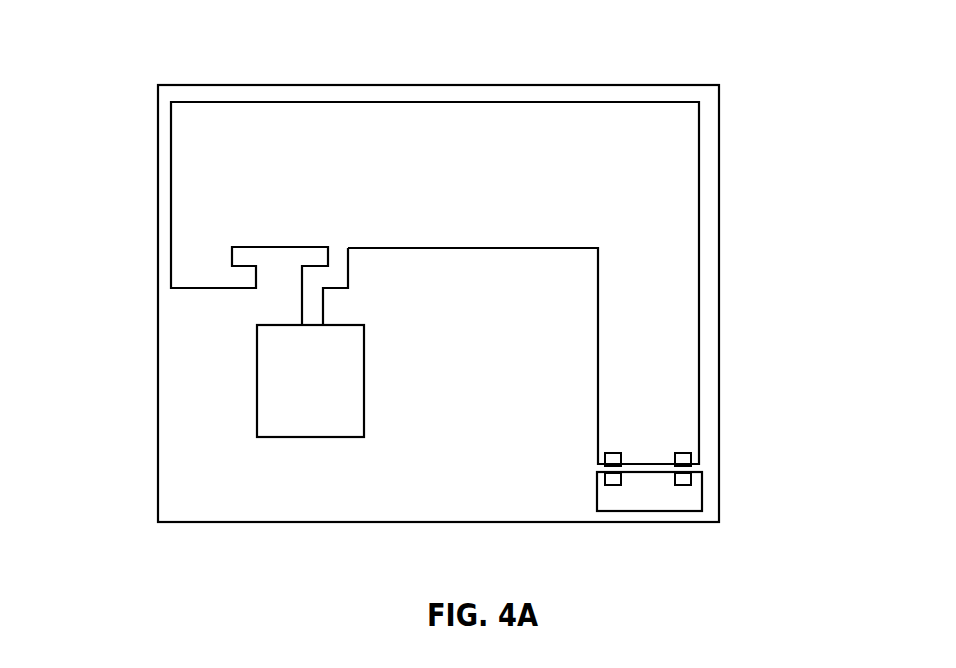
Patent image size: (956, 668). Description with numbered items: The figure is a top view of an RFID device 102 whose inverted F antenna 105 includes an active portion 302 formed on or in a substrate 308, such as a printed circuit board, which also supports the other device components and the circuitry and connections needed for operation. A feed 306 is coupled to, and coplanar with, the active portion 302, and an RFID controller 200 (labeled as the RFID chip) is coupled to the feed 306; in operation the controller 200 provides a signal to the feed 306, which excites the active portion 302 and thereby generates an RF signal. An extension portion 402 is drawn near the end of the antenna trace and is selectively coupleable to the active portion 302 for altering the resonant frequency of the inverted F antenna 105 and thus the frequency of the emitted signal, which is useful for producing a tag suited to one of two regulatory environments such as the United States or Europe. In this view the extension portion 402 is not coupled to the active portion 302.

The RFID device 102 is at (134, 156).
The inverted F antenna 105 is at (523, 117).
The active portion 302 is at (667, 161).
The substrate 308 is at (719, 230).
The feed 306 is at (350, 272).
The extension portion 402 is at (666, 498).
The RFID controller 200 is at (303, 437).